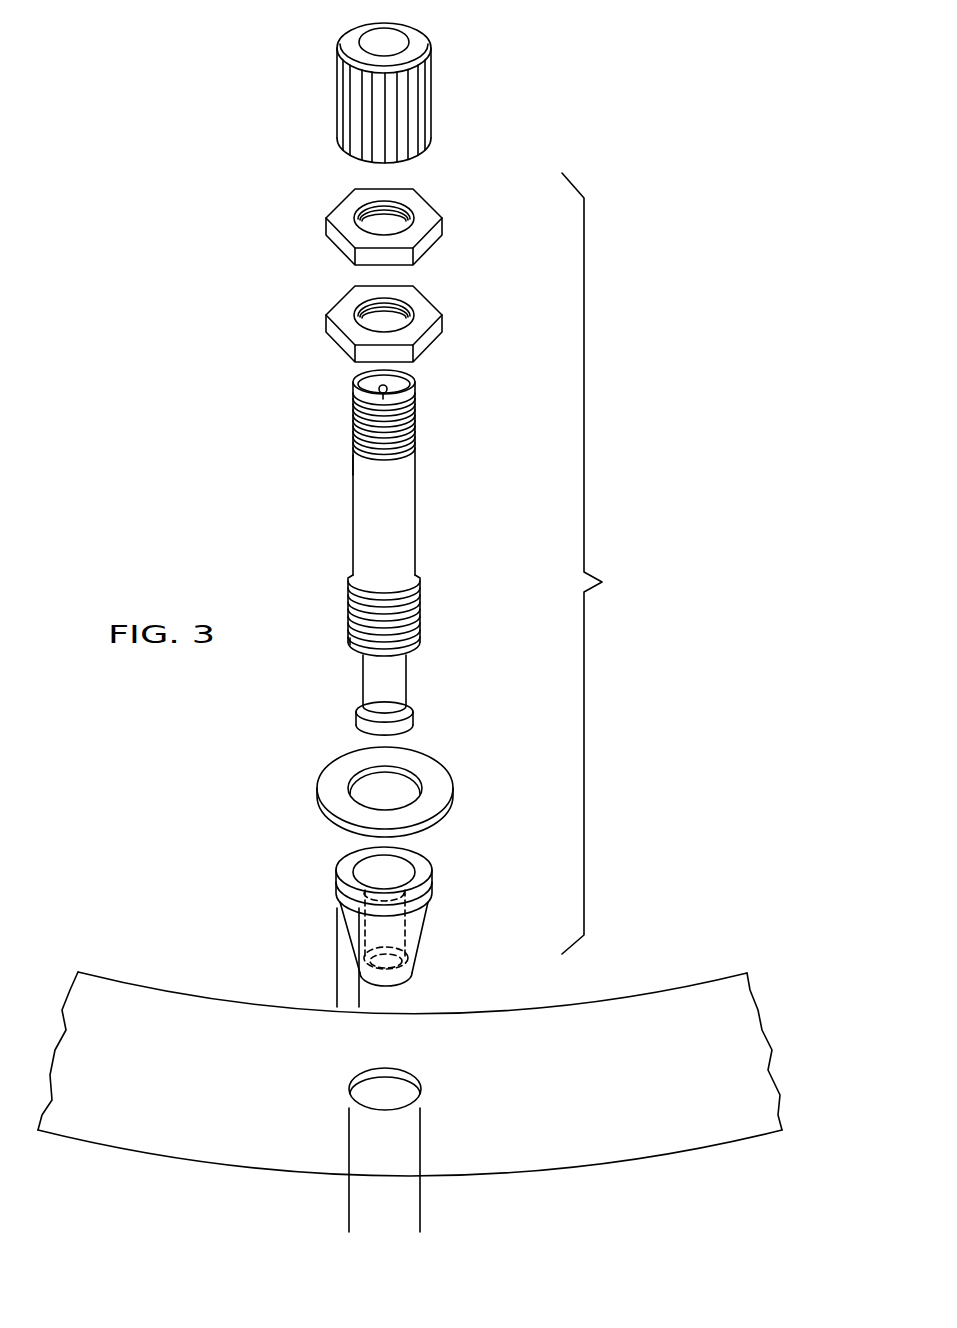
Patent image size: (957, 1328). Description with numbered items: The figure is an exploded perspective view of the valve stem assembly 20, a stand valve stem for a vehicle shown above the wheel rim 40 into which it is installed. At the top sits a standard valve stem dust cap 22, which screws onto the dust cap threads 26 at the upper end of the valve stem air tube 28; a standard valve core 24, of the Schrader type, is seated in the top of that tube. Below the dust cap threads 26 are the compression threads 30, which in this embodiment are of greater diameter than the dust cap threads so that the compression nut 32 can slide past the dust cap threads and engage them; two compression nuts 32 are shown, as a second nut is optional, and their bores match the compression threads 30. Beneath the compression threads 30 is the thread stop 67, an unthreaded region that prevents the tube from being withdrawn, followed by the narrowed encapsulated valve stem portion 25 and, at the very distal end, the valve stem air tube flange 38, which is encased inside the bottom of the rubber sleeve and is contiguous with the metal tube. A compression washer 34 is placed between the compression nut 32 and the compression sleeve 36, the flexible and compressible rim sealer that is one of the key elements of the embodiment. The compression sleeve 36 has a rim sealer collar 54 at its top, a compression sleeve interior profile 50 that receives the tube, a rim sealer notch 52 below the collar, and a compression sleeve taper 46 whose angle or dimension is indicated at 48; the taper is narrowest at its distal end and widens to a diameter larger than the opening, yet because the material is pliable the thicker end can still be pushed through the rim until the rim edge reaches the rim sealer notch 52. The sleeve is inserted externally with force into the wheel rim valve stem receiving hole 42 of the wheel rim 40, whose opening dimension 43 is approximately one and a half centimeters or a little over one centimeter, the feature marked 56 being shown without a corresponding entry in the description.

The valve stem assembly 20 is at (599, 563).
The valve stem dust cap 22 is at (421, 111).
The valve core 24 is at (390, 384).
The narrowed encapsulated valve stem portion 25 is at (407, 670).
The dust cap threads 26 is at (415, 428).
The valve stem air tube 28 is at (410, 537).
The compression threads 30 is at (421, 607).
The compression nut 32 is at (428, 215).
The compression washer 34 is at (441, 778).
The compression sleeve 36 is at (387, 902).
The valve stem air tube flange 38 is at (411, 708).
The wheel rim 40 is at (168, 1013).
The wheel rim valve stem receiving hole 42 is at (358, 1077).
The wheel rim receiving opening dimension 43 is at (420, 1213).
The compression sleeve taper 46 is at (347, 935).
The compression sleeve taper angle 48 is at (359, 1000).
The compression sleeve interior profile 50 is at (430, 870).
The rim sealer notch 52 is at (365, 903).
The rim sealer collar 54 is at (350, 866).
The stem shank 56 is at (352, 465).
The thread stop 67 is at (350, 641).